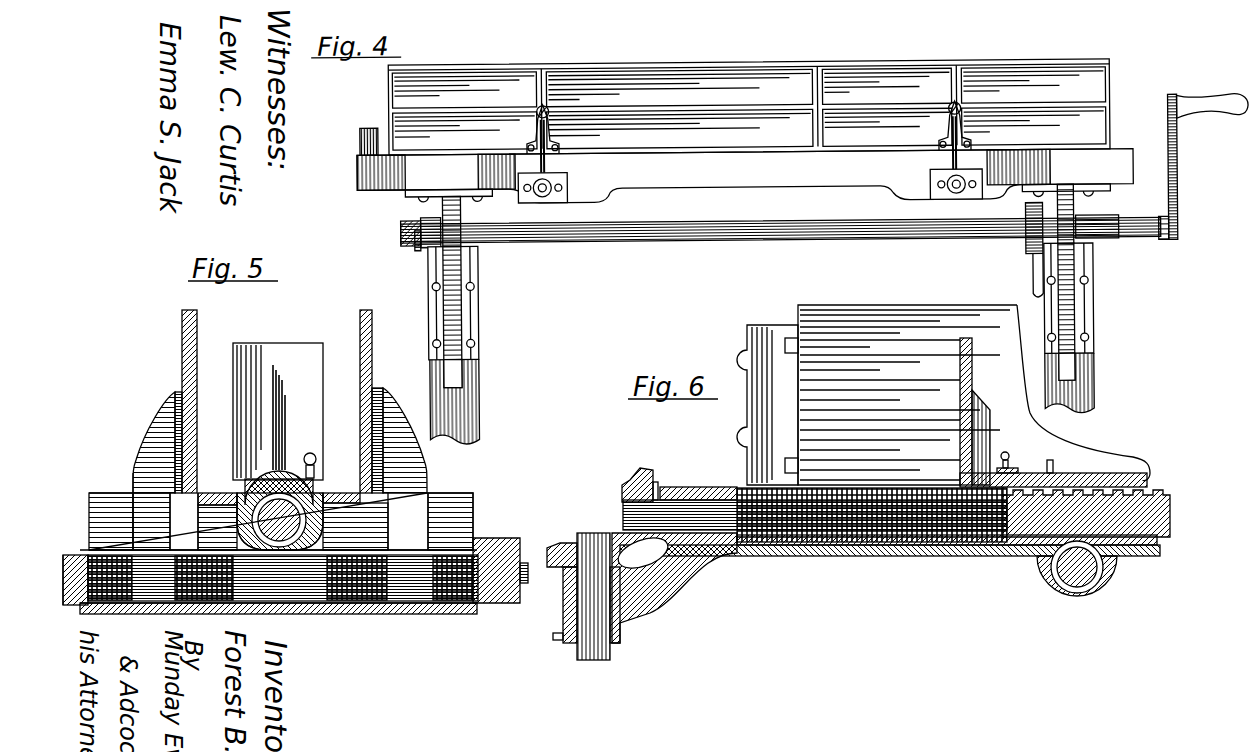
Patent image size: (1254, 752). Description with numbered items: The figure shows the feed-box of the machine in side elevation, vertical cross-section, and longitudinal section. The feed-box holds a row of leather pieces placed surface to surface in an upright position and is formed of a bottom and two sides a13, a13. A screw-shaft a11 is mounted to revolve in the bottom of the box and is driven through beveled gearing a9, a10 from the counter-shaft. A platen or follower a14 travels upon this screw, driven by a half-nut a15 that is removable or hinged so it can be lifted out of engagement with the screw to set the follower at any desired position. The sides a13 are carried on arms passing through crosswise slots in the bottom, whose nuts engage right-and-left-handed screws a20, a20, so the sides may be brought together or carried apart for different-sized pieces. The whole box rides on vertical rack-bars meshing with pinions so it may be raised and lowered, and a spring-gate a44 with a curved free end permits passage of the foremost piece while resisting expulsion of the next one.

In FIG. 6, the beveled gearing a9 is at (563, 545).
In FIG. 6, the beveled gearing a10 is at (646, 478).
In FIG. 5, the screw-shaft a11 is at (315, 487).
In FIG. 6, the screw-shaft a11 is at (717, 518).
In FIG. 4, the sides a13 is at (632, 82).
In FIG. 5, the sides a13 is at (197, 328).
In FIG. 5, the platen or follower a14 is at (278, 411).
In FIG. 6, the platen or follower a14 is at (977, 390).
In FIG. 5, the half-nut a15 is at (268, 503).
In FIG. 6, the half-nut a15 is at (1053, 467).
In FIG. 5, the screws a20 is at (193, 592).
In FIG. 6, the spring-gate a44 is at (767, 405).